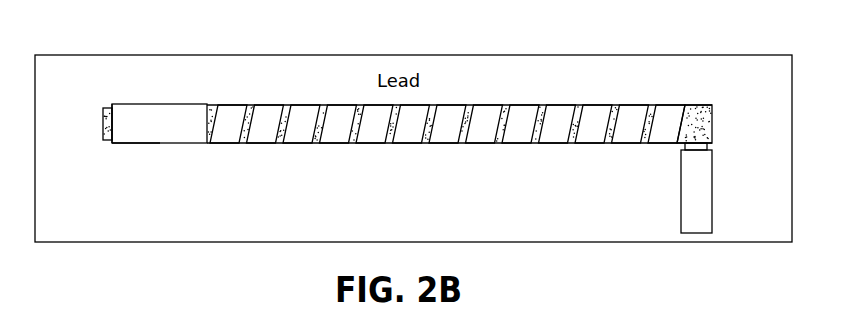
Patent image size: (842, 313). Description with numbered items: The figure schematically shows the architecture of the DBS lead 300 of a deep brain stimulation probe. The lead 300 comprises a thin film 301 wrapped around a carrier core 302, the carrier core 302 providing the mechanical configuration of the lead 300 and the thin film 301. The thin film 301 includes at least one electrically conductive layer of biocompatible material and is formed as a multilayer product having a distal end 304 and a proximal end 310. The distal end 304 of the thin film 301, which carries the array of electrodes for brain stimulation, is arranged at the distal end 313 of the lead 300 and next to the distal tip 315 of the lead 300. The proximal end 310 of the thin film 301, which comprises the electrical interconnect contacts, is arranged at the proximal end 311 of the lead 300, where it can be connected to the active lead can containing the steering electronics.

The DBS lead 300 is at (772, 92).
The thin film 301 is at (413, 145).
The carrier core 302 is at (712, 112).
The distal end 304 is at (185, 144).
The proximal end 310 is at (681, 183).
The proximal end 311 is at (712, 135).
The distal end 313 is at (124, 144).
The distal tip 315 is at (103, 121).